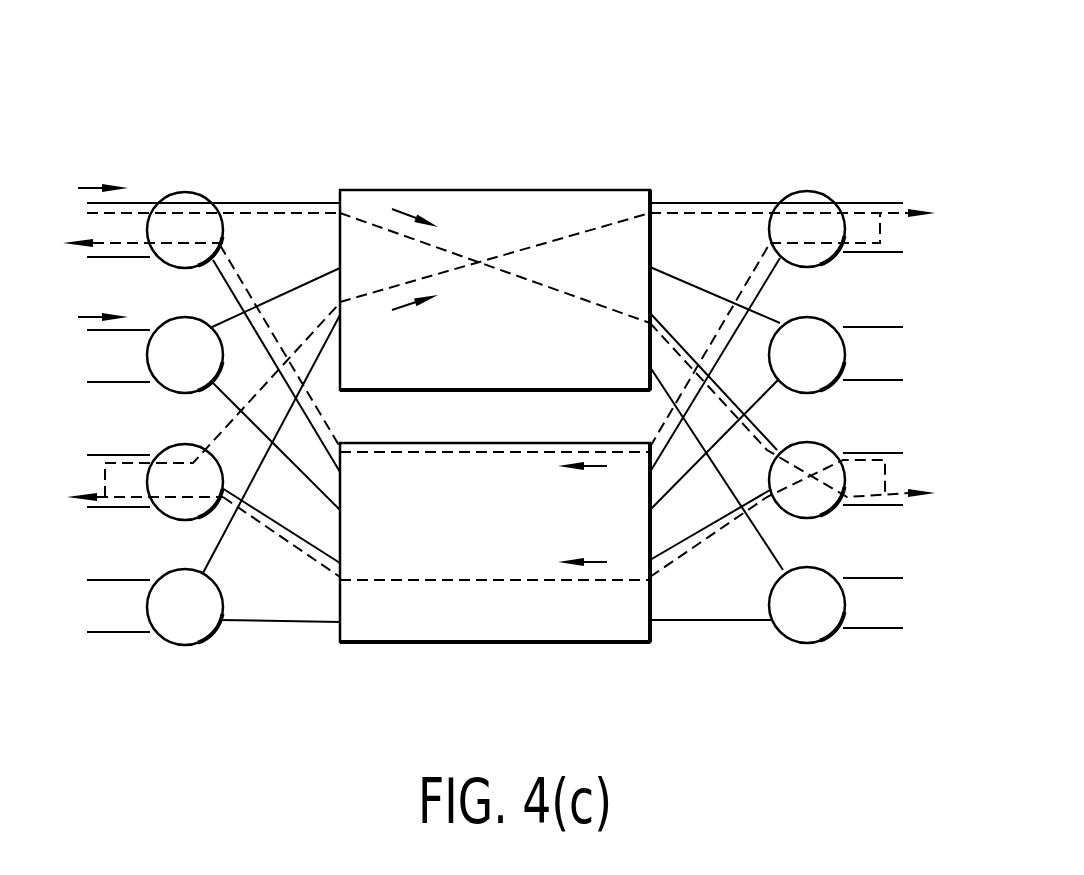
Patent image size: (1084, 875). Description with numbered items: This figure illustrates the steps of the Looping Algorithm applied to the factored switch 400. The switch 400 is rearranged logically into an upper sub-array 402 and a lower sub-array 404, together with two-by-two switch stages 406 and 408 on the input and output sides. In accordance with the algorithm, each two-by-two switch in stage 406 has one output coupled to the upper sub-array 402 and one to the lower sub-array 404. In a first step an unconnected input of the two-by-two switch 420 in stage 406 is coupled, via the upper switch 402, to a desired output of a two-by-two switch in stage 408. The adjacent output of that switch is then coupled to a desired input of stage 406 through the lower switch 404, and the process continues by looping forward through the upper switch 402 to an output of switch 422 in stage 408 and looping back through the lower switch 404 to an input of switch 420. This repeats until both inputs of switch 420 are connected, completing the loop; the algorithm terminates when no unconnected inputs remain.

The switch 400 is at (640, 48).
The upper sub-array 402 is at (513, 190).
The lower sub-array 404 is at (492, 642).
The 2×2 switch stage 406 is at (214, 160).
The 2×2 switch stage 408 is at (797, 135).
The 2×2 switch 420 is at (163, 192).
The 2×2 switch 422 is at (820, 193).